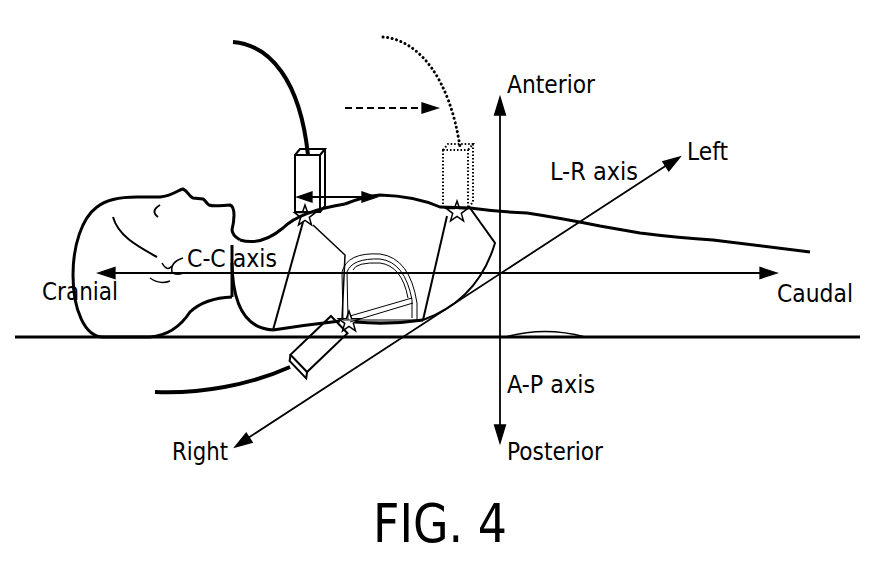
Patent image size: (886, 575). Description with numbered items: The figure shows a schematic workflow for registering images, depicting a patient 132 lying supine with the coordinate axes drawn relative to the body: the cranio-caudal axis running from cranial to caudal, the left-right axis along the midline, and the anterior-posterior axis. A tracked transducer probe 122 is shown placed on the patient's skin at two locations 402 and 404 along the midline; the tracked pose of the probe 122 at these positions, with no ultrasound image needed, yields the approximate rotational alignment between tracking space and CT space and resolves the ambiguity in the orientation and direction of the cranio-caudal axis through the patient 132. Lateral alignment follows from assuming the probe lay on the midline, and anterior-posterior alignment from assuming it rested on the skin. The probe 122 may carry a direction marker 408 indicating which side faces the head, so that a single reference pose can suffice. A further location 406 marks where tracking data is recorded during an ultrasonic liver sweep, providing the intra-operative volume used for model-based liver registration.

The transducer probe 122 is at (295, 162).
The patient 132 is at (726, 238).
The probe location 402 is at (302, 212).
The probe location 404 is at (446, 203).
The location 406 is at (352, 330).
The direction marker 408 is at (343, 193).